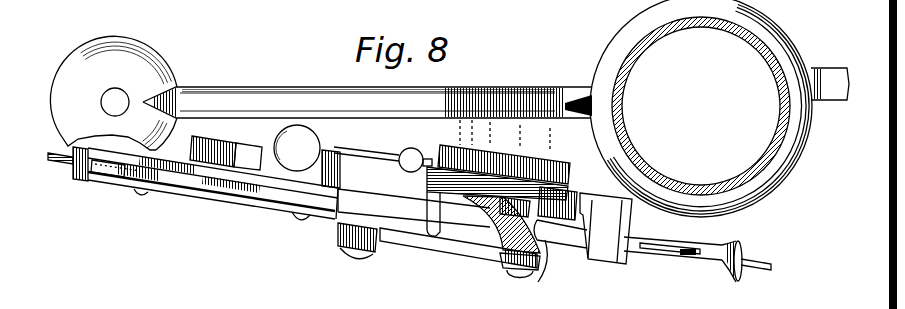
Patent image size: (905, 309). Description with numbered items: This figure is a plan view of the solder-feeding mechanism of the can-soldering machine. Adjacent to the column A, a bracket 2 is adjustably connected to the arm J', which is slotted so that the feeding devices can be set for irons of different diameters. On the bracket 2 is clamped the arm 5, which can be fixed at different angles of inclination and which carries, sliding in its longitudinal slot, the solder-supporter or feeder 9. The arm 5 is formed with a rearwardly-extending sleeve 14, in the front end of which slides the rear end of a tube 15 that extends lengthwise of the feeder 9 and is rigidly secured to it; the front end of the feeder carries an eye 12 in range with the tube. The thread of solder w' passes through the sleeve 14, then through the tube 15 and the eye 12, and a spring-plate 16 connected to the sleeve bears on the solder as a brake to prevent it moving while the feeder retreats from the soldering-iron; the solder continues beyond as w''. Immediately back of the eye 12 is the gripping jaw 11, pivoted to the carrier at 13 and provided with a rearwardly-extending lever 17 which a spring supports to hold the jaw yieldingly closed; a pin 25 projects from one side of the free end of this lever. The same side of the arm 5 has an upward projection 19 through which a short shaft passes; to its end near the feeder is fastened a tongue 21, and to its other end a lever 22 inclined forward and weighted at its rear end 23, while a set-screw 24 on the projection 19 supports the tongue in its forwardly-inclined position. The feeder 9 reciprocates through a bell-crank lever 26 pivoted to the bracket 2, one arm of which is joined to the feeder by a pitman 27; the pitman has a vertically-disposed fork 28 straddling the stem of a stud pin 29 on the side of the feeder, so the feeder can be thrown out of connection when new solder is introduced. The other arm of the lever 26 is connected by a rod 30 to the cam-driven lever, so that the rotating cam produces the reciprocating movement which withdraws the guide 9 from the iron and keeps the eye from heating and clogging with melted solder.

The column A is at (719, 108).
The arm J' is at (321, 94).
The bracket 2 is at (566, 179).
The arm 5 is at (261, 151).
The solder-supporter 9 is at (229, 201).
The jaw 11 is at (106, 186).
The eye 12 is at (75, 186).
The pivot 13 is at (141, 196).
The sleeve 14 is at (710, 261).
The tube 15 is at (555, 243).
The spring-plate 16 is at (674, 248).
The lever 17 is at (258, 196).
The upward projection 19 is at (370, 182).
The tongue 21 is at (261, 175).
The lever 22 is at (366, 149).
The weight 23 is at (415, 151).
The set-screw 24 is at (297, 148).
The pin 25 is at (335, 191).
The bell-crank lever 26 is at (483, 235).
The pitman 27 is at (437, 246).
The fork 28 is at (342, 243).
The stud pin 29 is at (353, 258).
The rod 30 is at (535, 273).
The thread of solder w' is at (756, 254).
The wire w'' is at (53, 170).